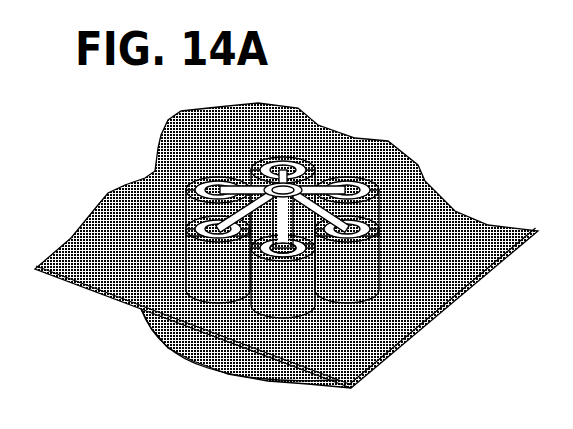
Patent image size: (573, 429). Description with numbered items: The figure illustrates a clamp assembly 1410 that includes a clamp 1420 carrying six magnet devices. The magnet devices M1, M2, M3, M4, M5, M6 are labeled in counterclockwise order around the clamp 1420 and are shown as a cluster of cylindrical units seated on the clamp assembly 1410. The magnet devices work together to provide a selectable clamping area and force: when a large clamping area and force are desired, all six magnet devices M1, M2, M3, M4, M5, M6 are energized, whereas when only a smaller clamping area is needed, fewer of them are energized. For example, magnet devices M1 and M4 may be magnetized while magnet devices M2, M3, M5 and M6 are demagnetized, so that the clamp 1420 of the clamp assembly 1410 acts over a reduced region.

The clamp assembly 1410 is at (286, 245).
The clamp 1420 is at (214, 224).
The magnet device M1 is at (215, 190).
The magnet device M2 is at (218, 259).
The magnet device M3 is at (283, 276).
The magnet device M4 is at (347, 259).
The magnet device M5 is at (353, 191).
The magnet device M6 is at (283, 187).